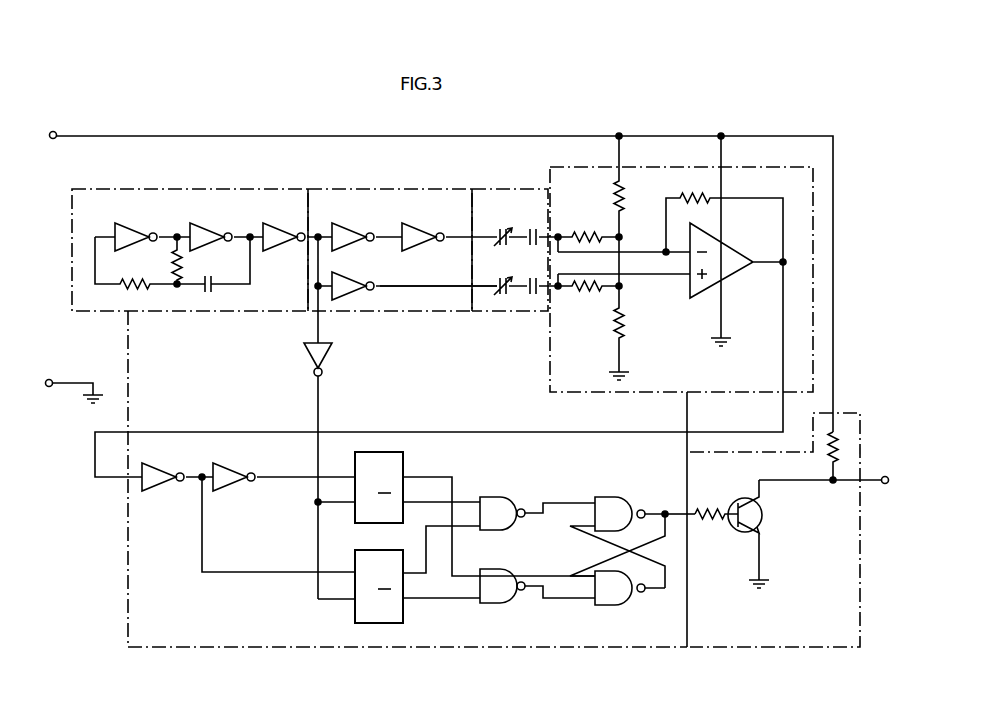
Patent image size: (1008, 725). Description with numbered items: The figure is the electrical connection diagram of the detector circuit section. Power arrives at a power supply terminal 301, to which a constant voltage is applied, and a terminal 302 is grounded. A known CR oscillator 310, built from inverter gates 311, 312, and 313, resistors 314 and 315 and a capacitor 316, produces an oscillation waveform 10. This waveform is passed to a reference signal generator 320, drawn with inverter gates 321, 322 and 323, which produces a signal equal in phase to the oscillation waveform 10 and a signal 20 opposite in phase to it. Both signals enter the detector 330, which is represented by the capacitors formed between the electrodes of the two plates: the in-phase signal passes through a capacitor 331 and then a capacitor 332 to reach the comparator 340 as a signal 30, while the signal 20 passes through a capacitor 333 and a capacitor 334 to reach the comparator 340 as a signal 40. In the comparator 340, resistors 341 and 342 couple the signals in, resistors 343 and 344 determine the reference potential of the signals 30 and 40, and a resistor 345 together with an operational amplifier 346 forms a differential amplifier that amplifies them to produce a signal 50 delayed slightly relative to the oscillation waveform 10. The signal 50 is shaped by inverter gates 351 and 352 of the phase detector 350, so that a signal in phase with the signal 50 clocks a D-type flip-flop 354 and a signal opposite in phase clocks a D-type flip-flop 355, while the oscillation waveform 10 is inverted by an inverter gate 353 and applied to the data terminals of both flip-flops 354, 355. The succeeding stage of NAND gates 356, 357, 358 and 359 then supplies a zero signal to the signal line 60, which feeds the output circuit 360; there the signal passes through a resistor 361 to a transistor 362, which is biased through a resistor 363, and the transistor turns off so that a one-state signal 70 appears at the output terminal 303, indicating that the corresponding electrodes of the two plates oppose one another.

The power supply terminal 301 is at (54, 139).
The grounded terminal 302 is at (50, 379).
The output terminal 303 is at (887, 484).
The CR oscillator 310 is at (205, 189).
The inverter gate 311 is at (140, 225).
The inverter gate 312 is at (214, 225).
The inverter gate 313 is at (287, 225).
The resistor 314 is at (135, 281).
The resistor 315 is at (183, 266).
The capacitor 316 is at (212, 292).
The oscillation waveform 10 is at (319, 226).
The opposite-phase signal 20 is at (373, 284).
The reference signal generator 320 is at (428, 189).
The inverter gate 321 is at (356, 225).
The inverter gate 322 is at (426, 225).
The inverter gate 323 is at (356, 274).
The detector 330 is at (532, 189).
The capacitor 331 is at (498, 225).
The capacitor 332 is at (534, 228).
The capacitor 333 is at (505, 296).
The capacitor 334 is at (533, 296).
The signal 30 is at (558, 234).
The signal 40 is at (556, 290).
The comparator 340 is at (590, 392).
The resistor 341 is at (594, 222).
The resistor 342 is at (590, 291).
The resistor 343 is at (614, 196).
The resistor 344 is at (624, 318).
The resistor 345 is at (684, 192).
The operational amplifier 346 is at (738, 257).
The signal 50 is at (413, 431).
The phase detector 350 is at (440, 648).
The inverter gate 351 is at (168, 465).
The inverter gate 352 is at (239, 465).
The inverter gate 353 is at (323, 362).
The D-type flip-flop 354 is at (403, 462).
The D-type flip-flop 355 is at (403, 614).
The NAND gate 356 is at (510, 488).
The NAND gate 357 is at (506, 569).
The NAND gate 358 is at (626, 488).
The NAND gate 359 is at (622, 605).
The signal line 60 is at (673, 512).
The output circuit 360 is at (860, 592).
The resistor 361 is at (708, 520).
The transistor 362 is at (763, 518).
The resistor 363 is at (838, 444).
The signal 70 is at (859, 484).